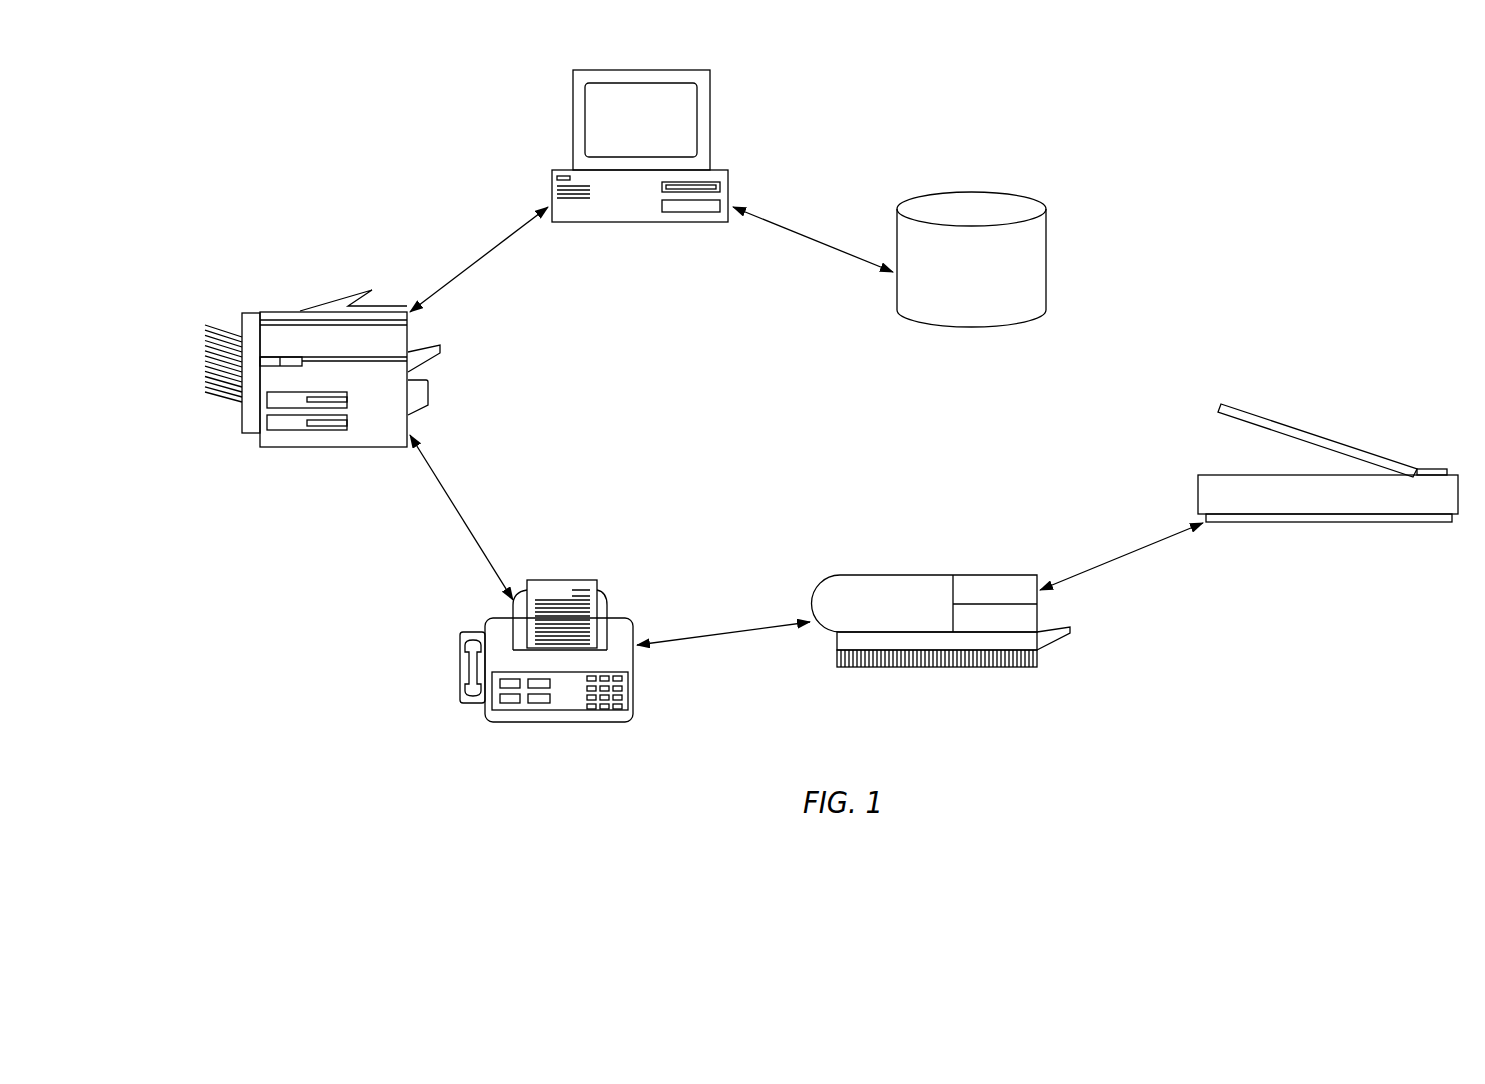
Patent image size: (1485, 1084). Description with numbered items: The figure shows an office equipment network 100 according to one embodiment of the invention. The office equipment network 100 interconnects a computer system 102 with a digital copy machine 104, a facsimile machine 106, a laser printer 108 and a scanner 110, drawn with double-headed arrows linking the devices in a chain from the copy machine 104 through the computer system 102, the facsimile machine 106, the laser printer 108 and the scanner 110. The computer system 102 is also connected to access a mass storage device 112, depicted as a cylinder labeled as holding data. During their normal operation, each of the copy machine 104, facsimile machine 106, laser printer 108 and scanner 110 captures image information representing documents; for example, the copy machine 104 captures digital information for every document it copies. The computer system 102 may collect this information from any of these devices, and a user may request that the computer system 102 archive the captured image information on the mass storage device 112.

The office equipment network 100 is at (209, 121).
The computer system 102 is at (711, 113).
The digital copy machine 104 is at (286, 312).
The facsimile machine 106 is at (556, 580).
The laser printer 108 is at (931, 575).
The scanner 110 is at (1340, 440).
The mass storage device 112 is at (970, 190).